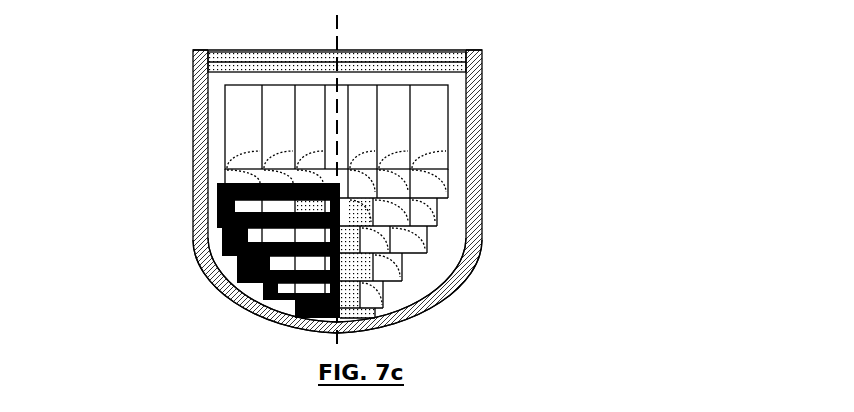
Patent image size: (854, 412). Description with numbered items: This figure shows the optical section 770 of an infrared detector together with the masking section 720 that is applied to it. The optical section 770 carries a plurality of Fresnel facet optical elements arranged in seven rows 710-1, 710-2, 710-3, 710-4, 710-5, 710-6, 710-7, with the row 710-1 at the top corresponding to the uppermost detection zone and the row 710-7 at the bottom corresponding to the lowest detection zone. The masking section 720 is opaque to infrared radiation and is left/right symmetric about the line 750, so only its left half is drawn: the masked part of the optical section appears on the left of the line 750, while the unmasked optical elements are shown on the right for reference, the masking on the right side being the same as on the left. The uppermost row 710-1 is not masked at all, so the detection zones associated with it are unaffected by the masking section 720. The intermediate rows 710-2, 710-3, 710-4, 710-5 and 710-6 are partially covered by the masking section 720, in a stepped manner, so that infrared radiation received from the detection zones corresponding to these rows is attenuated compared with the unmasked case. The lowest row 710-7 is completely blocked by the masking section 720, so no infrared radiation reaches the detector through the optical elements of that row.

The optical section 770 is at (266, 191).
The line of symmetry 750 is at (335, 32).
The masking section 720 is at (292, 285).
The first row of optical elements 710-1 is at (464, 143).
The second row of optical elements 710-2 is at (464, 191).
The third row of optical elements 710-3 is at (451, 220).
The fourth row of optical elements 710-4 is at (441, 245).
The fifth row of optical elements 710-5 is at (416, 273).
The sixth row of optical elements 710-6 is at (397, 297).
The seventh row of optical elements 710-7 is at (394, 310).